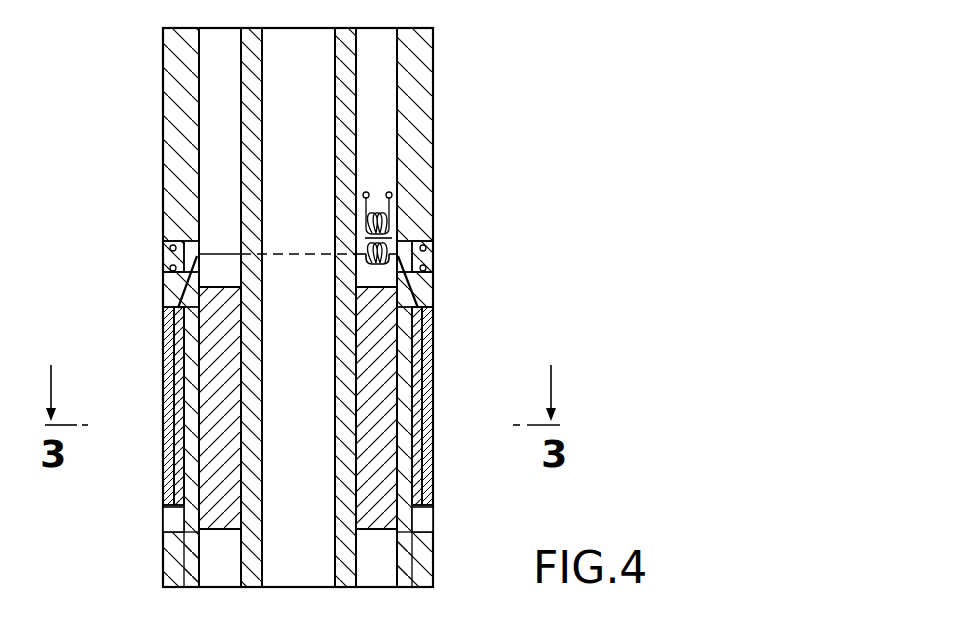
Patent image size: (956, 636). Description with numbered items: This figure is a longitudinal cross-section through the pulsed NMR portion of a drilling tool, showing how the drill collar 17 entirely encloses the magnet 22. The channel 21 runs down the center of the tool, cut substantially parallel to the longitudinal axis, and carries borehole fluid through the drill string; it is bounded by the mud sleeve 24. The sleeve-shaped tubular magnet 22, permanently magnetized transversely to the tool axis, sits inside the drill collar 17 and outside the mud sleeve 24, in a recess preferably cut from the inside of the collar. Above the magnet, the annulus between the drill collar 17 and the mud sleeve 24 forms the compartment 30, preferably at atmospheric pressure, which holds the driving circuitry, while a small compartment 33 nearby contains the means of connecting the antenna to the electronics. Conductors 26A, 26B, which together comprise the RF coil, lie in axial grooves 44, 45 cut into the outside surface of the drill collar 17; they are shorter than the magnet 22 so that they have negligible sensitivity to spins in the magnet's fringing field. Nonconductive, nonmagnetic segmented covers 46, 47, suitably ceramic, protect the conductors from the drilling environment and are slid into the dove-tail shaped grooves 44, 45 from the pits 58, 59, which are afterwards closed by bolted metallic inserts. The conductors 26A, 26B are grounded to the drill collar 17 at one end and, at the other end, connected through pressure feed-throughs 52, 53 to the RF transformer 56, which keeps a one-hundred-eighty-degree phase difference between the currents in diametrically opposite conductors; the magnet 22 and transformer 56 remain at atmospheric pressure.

The drill collar 17 is at (177, 203).
The channel 21 is at (309, 87).
The magnet 22 is at (215, 497).
The mud sleeve 24 is at (248, 120).
The compartment 30 is at (217, 157).
The small compartment 33 is at (178, 258).
The axial groove 44 is at (423, 402).
The axial groove 45 is at (167, 330).
The segmented cover 46 is at (427, 371).
The segmented cover 47 is at (167, 418).
The pressure feed-through 52 is at (433, 276).
The pressure feed-through 53 is at (167, 297).
The RF transformer 56 is at (397, 213).
The pit 58 is at (423, 512).
The pit 59 is at (168, 518).
The conductor 26A is at (167, 375).
The conductor 26B is at (433, 317).